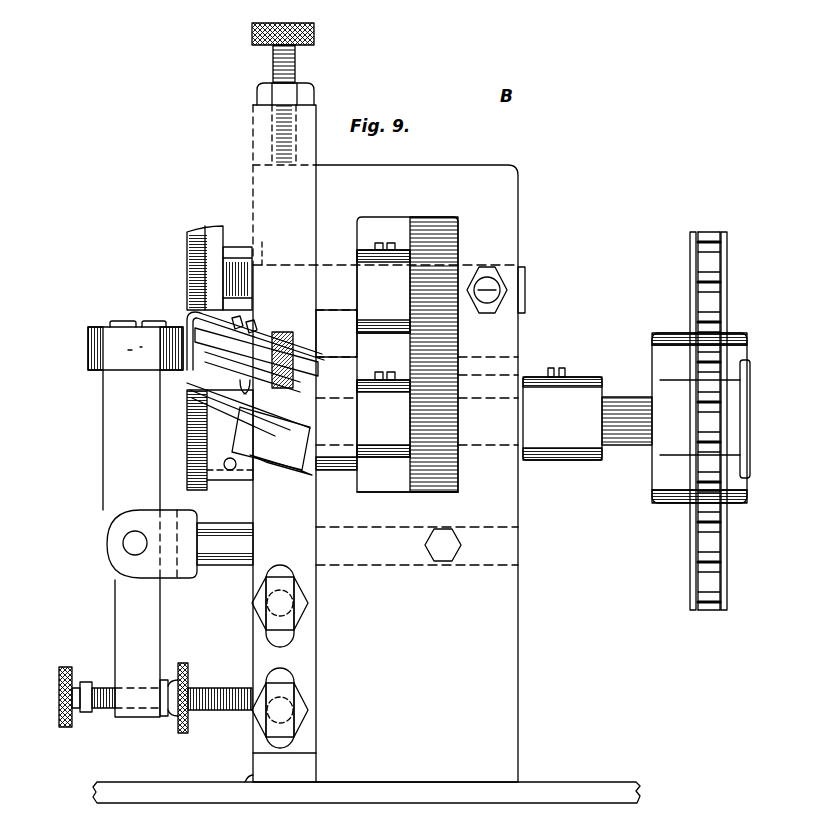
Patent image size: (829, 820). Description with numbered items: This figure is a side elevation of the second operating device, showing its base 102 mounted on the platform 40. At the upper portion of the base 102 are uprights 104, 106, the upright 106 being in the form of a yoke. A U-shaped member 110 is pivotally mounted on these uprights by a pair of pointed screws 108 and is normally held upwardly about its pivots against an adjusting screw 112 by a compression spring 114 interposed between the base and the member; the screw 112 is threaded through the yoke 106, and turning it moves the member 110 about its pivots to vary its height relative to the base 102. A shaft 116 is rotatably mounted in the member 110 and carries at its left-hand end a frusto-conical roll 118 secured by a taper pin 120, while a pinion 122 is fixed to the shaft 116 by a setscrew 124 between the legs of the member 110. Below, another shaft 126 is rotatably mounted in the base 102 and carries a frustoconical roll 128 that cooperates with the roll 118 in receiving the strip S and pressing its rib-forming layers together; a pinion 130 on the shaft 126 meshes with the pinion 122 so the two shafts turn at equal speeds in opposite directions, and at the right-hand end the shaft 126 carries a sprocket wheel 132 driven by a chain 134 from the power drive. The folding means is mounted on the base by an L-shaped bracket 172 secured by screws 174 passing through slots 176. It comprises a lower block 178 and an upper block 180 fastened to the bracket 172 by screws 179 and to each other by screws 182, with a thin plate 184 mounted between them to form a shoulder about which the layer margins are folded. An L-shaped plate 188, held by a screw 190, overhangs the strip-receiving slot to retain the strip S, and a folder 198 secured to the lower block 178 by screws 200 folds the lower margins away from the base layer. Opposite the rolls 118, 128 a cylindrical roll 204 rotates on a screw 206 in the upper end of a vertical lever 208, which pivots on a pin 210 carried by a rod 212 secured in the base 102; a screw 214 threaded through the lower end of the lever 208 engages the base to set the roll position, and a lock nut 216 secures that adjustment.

The platform 40 is at (622, 787).
The base 102 is at (506, 663).
The upright 104 is at (505, 345).
The upright 106 is at (256, 175).
The pointed screws 108 is at (512, 282).
The U-shaped member 110 is at (500, 212).
The adjusting screw 112 is at (297, 66).
The compression spring 114 is at (317, 350).
The shaft 116 is at (264, 250).
The frusto-conical roll 118 is at (193, 228).
The taper pin 120 is at (237, 246).
The pinion 122 is at (432, 222).
The setscrew 124 is at (378, 247).
The shaft 126 is at (348, 452).
The frustoconical roll 128 is at (195, 487).
The pinion 130 is at (450, 452).
The sprocket wheel 132 is at (712, 352).
The chain 134 is at (707, 232).
The L-shaped bracket 172 is at (302, 545).
The screws 174 is at (304, 620).
The slots 176 is at (285, 678).
The lower block 178 is at (298, 398).
The screws 179 is at (256, 474).
The upper block 180 is at (300, 380).
The screws 182 is at (246, 318).
The plate 184 is at (246, 360).
The L-shaped plate 188 is at (185, 316).
The screw 190 is at (268, 336).
The folder 198 is at (180, 395).
The screws 200 is at (186, 405).
The cylindrical roll 204 is at (88, 330).
The screw 206 is at (122, 322).
The vertical lever 208 is at (103, 430).
The pin 210 is at (130, 548).
The rod 212 is at (228, 565).
The screw 214 is at (100, 683).
The lock nut 216 is at (180, 733).
The strip S is at (178, 376).